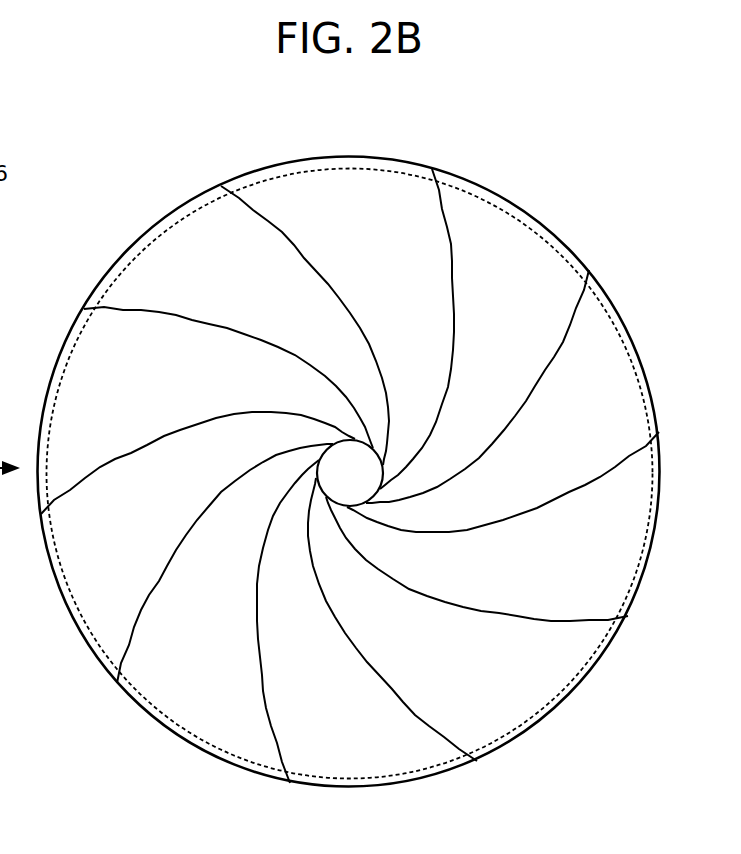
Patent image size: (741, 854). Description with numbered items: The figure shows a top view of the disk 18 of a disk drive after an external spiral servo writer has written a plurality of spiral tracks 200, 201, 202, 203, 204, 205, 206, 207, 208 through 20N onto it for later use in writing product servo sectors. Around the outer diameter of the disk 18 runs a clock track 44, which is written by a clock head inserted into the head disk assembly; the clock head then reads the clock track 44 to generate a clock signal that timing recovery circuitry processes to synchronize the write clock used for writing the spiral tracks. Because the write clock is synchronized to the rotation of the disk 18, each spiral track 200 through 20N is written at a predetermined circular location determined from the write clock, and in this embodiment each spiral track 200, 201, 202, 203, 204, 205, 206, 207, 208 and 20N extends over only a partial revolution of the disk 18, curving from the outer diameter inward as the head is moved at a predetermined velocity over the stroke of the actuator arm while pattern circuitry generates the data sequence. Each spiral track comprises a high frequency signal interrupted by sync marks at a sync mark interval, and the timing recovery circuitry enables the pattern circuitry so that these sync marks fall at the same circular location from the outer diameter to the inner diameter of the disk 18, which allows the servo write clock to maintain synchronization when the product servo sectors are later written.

The disk 18 is at (555, 213).
The clock track 44 is at (658, 562).
The spiral track 200 is at (450, 220).
The spiral track 201 is at (585, 305).
The spiral track 202 is at (655, 465).
The spiral track 203 is at (573, 622).
The spiral track 204 is at (443, 742).
The spiral track 205 is at (270, 733).
The spiral track 206 is at (117, 643).
The spiral track 207 is at (60, 510).
The spiral track 208 is at (118, 305).
The spiral track 20N is at (252, 200).